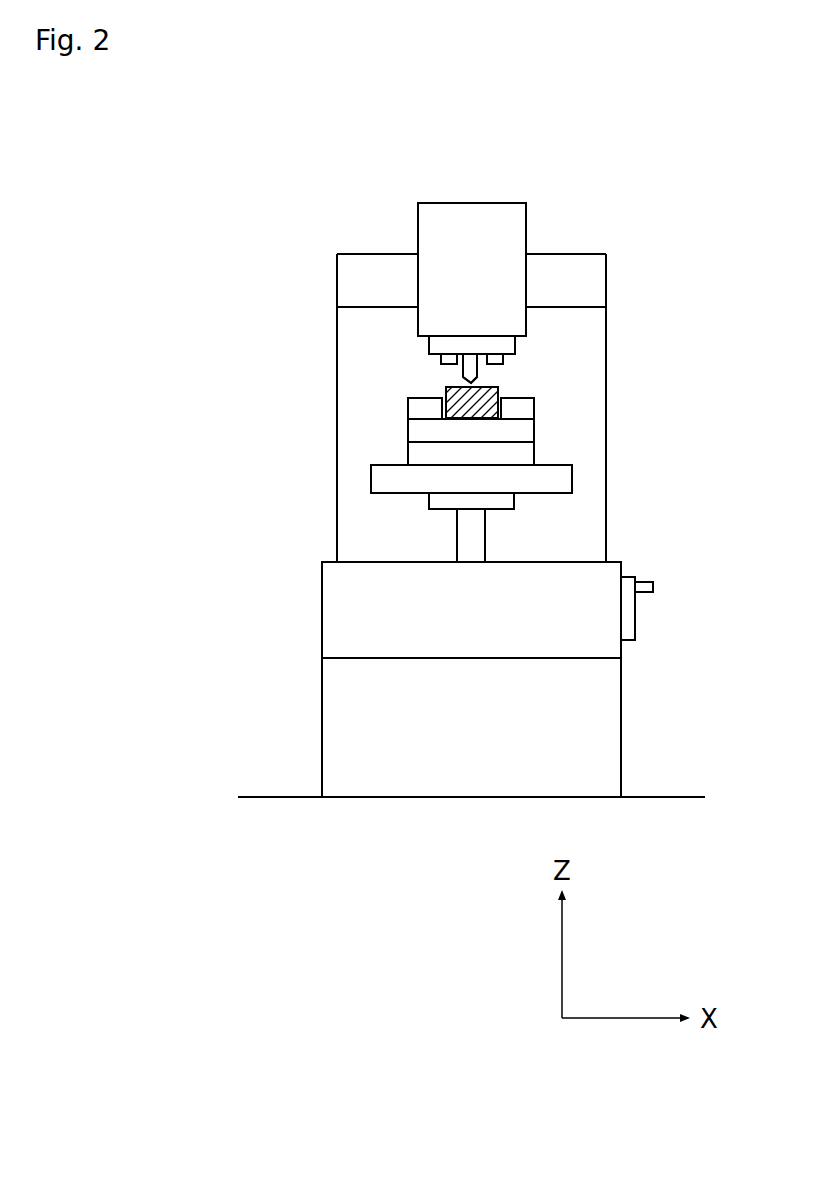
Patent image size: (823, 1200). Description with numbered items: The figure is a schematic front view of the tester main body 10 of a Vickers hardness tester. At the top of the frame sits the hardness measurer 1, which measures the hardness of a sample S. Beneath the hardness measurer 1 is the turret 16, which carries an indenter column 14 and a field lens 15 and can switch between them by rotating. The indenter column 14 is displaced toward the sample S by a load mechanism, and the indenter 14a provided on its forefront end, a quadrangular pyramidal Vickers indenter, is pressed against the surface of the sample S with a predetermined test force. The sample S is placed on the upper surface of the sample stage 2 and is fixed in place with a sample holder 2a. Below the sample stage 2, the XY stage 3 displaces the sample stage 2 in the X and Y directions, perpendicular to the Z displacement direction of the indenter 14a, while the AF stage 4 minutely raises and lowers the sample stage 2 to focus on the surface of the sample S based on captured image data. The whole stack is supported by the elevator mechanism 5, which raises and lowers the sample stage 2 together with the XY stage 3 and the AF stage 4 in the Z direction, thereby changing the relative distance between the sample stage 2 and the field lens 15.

The tester main body 10 is at (638, 168).
The hardness measurer 1 is at (526, 216).
The turret 16 is at (515, 347).
The field lens 15 is at (441, 358).
The indenter column 14 is at (477, 366).
The indenter 14a is at (478, 380).
The sample S is at (498, 417).
The sample holder 2a is at (408, 404).
The sample stage 2 is at (408, 432).
The AF stage 4 is at (502, 421).
The XY stage 3 is at (371, 472).
The elevator mechanism 5 is at (455, 503).